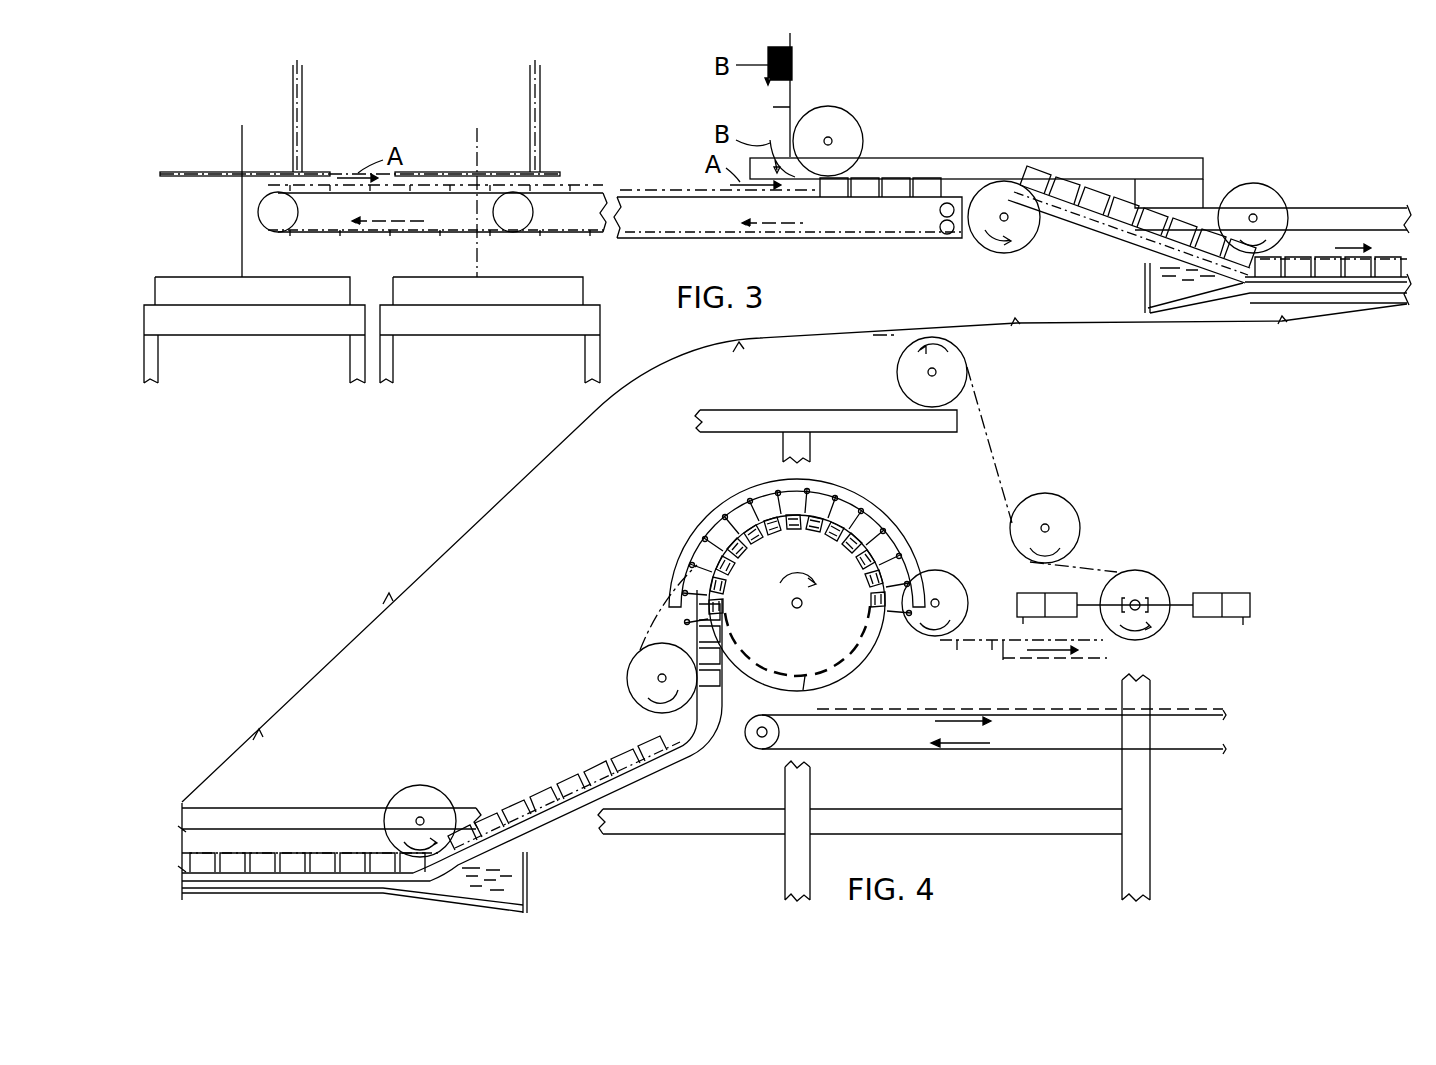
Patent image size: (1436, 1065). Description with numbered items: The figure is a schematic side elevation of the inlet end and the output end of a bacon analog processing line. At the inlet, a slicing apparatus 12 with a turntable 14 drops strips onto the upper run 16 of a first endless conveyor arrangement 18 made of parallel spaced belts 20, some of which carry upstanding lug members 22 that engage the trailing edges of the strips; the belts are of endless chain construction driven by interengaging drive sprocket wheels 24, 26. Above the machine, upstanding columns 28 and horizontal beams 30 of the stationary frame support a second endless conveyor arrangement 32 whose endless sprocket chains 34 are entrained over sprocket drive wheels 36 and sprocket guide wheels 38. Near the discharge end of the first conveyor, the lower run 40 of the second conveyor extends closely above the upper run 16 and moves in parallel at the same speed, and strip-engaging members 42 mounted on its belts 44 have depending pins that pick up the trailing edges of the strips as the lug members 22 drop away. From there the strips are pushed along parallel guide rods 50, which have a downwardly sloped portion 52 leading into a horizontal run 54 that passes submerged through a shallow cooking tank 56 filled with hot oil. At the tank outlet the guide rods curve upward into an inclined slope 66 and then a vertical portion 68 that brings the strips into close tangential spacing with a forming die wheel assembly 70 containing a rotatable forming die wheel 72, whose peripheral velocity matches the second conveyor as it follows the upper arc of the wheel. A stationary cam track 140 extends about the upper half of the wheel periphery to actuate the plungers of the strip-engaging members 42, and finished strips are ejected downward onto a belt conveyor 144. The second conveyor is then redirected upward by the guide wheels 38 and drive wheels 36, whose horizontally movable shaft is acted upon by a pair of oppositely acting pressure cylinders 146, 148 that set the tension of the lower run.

In FIG. 3, the slicing apparatus 12 is at (258, 335).
In FIG. 3, the turntable 14 is at (180, 172).
In FIG. 3, the upper run 16 is at (648, 190).
In FIG. 3, the first endless conveyor arrangement 18 is at (643, 240).
In FIG. 3, the belts 20 is at (388, 235).
In FIG. 3, the lug members 22 is at (312, 183).
In FIG. 3, the drive sprocket wheel 24 is at (257, 212).
In FIG. 3, the drive sprocket wheel 26 is at (943, 206).
In FIG. 4, the upstanding columns 28 is at (812, 445).
In FIG. 4, the horizontal beams 30 is at (753, 410).
In FIG. 3, the second endless conveyor arrangement 32 is at (1207, 217).
In FIG. 4, the second endless conveyor arrangement 32 is at (531, 828).
In FIG. 3, the endless sprocket chains 34 is at (1067, 197).
In FIG. 4, the sprocket drive wheels 36 is at (1160, 575).
In FIG. 3, the sprocket guide wheels 38 is at (862, 122).
In FIG. 4, the sprocket guide wheels 38 is at (420, 784).
In FIG. 3, the lower run 40 is at (930, 178).
In FIG. 3, the strip-engaging members 42 is at (863, 177).
In FIG. 4, the strip-engaging members 42 is at (522, 800).
In FIG. 4, the belts 44 is at (990, 433).
In FIG. 3, the guide rods 50 is at (1048, 220).
In FIG. 4, the guide rods 50 is at (556, 817).
In FIG. 3, the downwardly sloped portion 52 is at (1143, 270).
In FIG. 3, the horizontal run 54 is at (1250, 288).
In FIG. 4, the horizontal run 54 is at (288, 880).
In FIG. 3, the cooking tank 56 is at (1348, 298).
In FIG. 4, the cooking tank 56 is at (370, 893).
In FIG. 4, the inclined slope 66 is at (628, 772).
In FIG. 4, the vertical portion 68 is at (748, 729).
In FIG. 4, the forming die wheel assembly 70 is at (880, 657).
In FIG. 4, the forming die wheel 72 is at (838, 687).
In FIG. 4, the stationary cam track 140 is at (878, 505).
In FIG. 4, the belt conveyor 144 is at (962, 752).
In FIG. 4, the pressure cylinder 146 is at (1017, 608).
In FIG. 4, the pressure cylinder 148 is at (1250, 610).